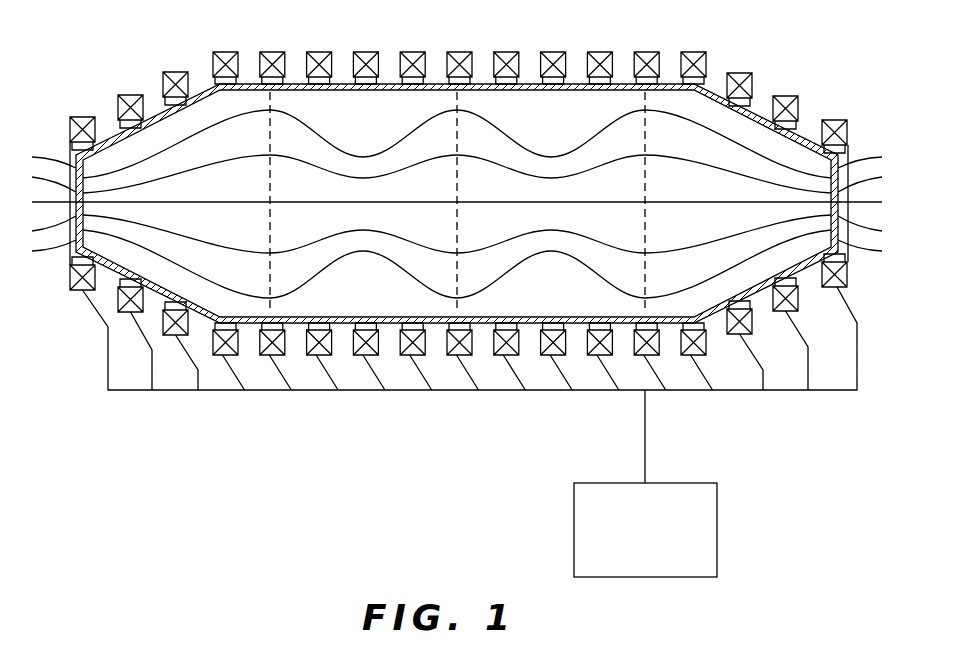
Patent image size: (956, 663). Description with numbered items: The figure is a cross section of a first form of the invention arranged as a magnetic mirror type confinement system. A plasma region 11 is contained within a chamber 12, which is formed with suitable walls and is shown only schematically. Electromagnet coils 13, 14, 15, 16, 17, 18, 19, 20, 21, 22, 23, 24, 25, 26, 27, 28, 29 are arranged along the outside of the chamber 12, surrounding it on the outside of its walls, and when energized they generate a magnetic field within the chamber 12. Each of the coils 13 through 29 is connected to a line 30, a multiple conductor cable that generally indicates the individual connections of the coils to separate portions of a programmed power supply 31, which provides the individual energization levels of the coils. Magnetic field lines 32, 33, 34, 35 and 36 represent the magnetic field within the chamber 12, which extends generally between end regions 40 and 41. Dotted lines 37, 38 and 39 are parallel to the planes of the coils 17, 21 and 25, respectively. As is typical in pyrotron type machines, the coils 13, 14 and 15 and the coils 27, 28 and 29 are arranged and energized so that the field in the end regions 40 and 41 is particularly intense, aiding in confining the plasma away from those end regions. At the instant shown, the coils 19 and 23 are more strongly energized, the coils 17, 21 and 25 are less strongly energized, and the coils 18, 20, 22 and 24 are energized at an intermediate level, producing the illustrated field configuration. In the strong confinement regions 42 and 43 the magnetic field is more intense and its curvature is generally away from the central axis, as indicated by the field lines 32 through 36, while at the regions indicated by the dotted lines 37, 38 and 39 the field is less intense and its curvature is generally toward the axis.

The plasma region 11 is at (429, 190).
The chamber 12 is at (69, 158).
The electromagnet coil 13 is at (82, 117).
The electromagnet coil 14 is at (130, 95).
The electromagnet coil 15 is at (176, 72).
The electromagnet coil 16 is at (226, 52).
The electromagnet coil 17 is at (272, 52).
The electromagnet coil 18 is at (319, 52).
The electromagnet coil 19 is at (366, 52).
The electromagnet coil 20 is at (418, 27).
The electromagnet coil 21 is at (460, 52).
The electromagnet coil 22 is at (506, 52).
The electromagnet coil 23 is at (557, 27).
The electromagnet coil 24 is at (605, 27).
The electromagnet coil 25 is at (655, 27).
The electromagnet coil 26 is at (694, 52).
The electromagnet coil 27 is at (740, 73).
The electromagnet coil 28 is at (786, 96).
The electromagnet coil 29 is at (834, 120).
The line 30 is at (562, 392).
The programmed power supply 31 is at (603, 482).
The magnetic field line 32 is at (190, 142).
The magnetic field line 33 is at (228, 160).
The magnetic field line 34 is at (238, 201).
The magnetic field line 35 is at (237, 245).
The magnetic field line 36 is at (240, 285).
The dotted line 37 is at (270, 100).
The dotted line 38 is at (457, 100).
The dotted line 39 is at (645, 100).
The end region 40 is at (114, 165).
The end region 41 is at (798, 162).
The strong confinement region 42 is at (366, 140).
The strong confinement region 43 is at (554, 140).